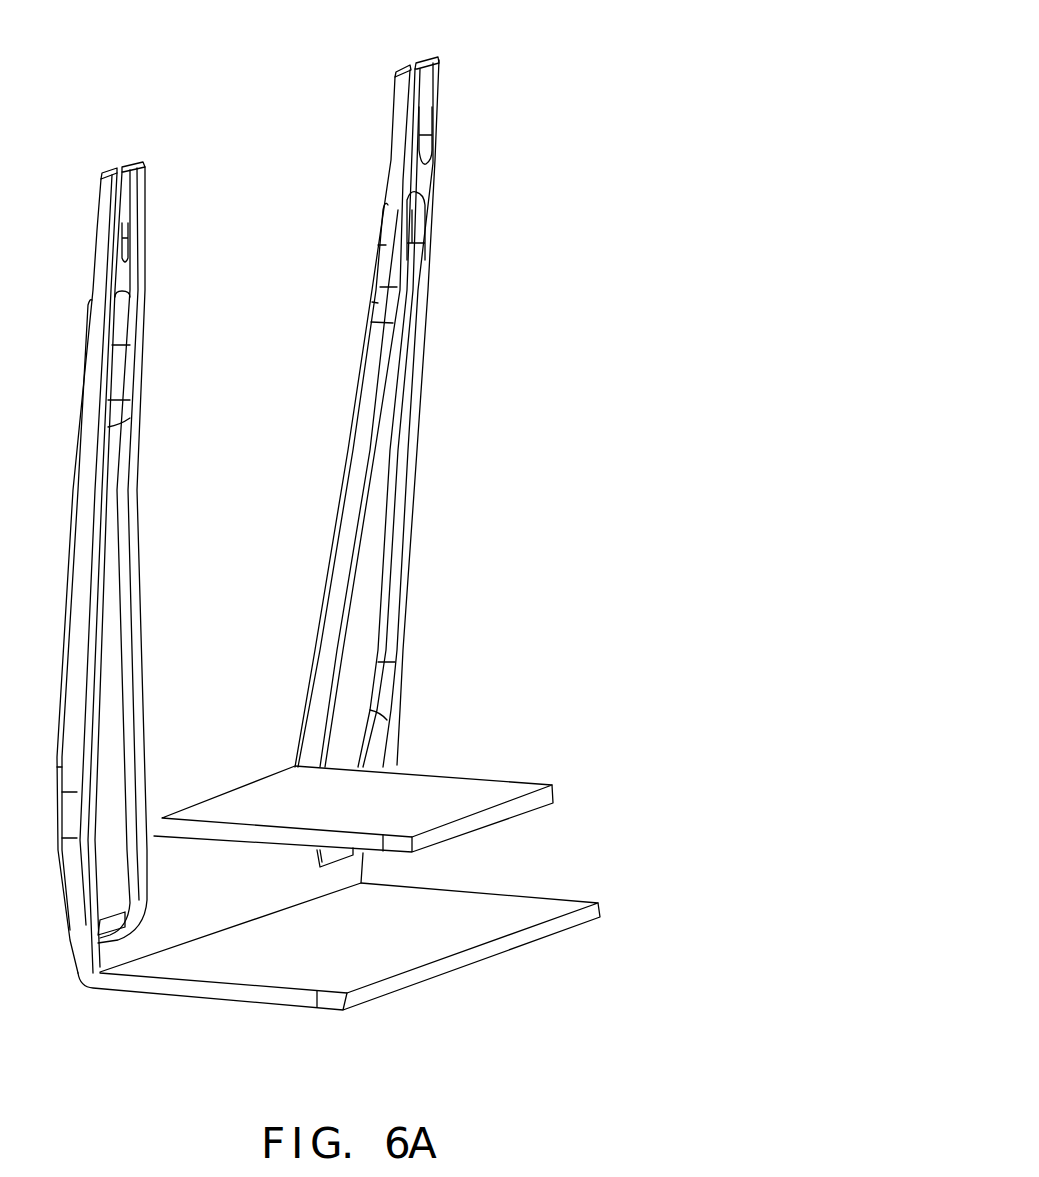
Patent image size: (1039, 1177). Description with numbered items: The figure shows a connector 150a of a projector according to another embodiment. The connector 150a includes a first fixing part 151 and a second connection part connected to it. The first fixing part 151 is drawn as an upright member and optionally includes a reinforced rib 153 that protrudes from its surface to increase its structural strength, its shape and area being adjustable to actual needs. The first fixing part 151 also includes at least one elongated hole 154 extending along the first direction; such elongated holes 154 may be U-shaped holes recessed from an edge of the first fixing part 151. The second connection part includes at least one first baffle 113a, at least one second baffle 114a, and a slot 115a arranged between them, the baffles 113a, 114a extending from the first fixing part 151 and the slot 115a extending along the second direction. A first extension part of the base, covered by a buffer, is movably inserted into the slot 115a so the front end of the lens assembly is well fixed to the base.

The connector 150a is at (627, 84).
The first fixing part 151 is at (421, 329).
The reinforced rib 153 is at (365, 622).
The elongated hole 154 is at (423, 119).
The first baffle 113a is at (543, 797).
The second baffle 114a is at (600, 915).
The slot 115a is at (707, 768).